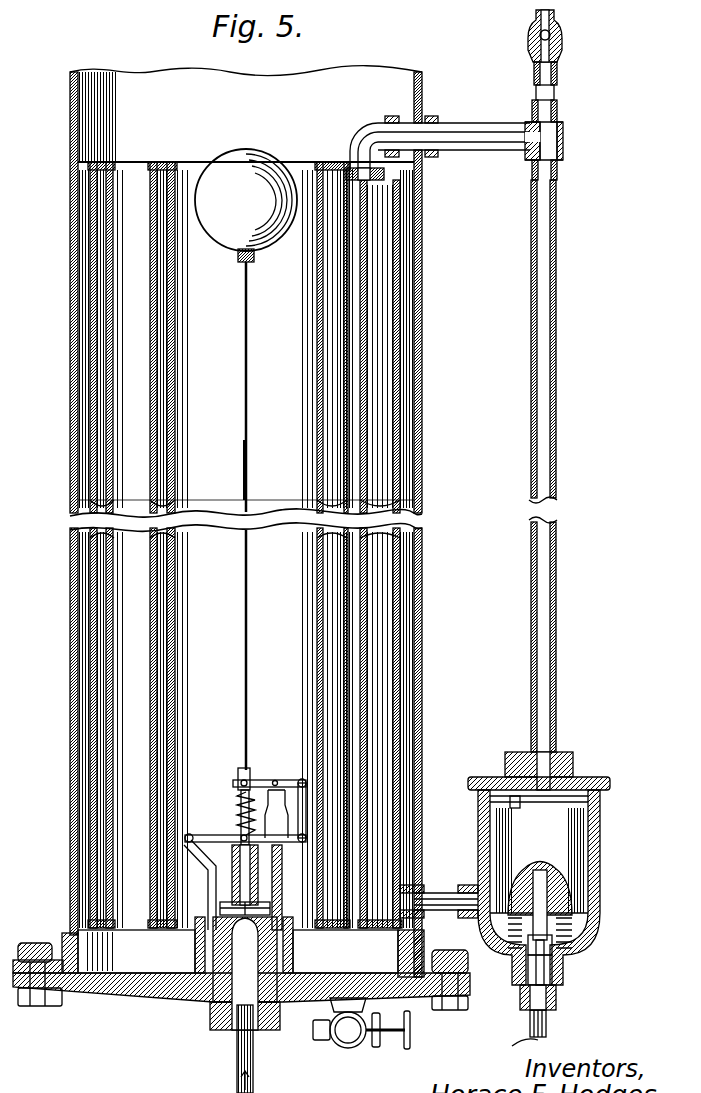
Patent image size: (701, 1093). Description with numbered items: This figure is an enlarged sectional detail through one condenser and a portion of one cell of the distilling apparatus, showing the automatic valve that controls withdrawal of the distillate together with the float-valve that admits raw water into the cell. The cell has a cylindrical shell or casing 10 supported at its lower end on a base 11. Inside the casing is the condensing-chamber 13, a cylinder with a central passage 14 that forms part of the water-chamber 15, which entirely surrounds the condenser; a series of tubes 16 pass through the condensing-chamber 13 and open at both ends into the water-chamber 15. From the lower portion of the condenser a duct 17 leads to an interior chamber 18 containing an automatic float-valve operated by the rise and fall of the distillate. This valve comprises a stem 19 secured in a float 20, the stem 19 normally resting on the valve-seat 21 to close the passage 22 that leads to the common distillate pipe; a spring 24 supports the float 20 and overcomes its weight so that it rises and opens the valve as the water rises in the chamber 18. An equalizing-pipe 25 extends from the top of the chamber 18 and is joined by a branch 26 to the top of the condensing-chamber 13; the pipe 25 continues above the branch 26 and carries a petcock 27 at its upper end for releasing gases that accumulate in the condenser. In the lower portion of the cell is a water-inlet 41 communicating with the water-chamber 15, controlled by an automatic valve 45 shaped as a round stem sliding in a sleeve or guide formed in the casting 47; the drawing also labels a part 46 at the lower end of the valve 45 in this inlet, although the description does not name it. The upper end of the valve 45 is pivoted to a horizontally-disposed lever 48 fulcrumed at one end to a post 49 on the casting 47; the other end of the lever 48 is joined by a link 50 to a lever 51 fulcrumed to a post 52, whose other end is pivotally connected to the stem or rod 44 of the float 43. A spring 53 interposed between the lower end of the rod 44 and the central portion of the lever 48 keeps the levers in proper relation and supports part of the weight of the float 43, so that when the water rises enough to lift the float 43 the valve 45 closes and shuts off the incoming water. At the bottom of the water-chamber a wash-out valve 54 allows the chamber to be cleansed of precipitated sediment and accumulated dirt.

The cylindrical shell or casing 10 is at (221, 521).
The base 11 is at (132, 999).
The condensing-chamber 13 is at (172, 163).
The central passage 14 is at (266, 516).
The water-chamber 15 is at (85, 940).
The tubes 16 is at (120, 372).
The duct 17 is at (432, 893).
The interior chamber 18 is at (592, 905).
The stem 19 is at (566, 938).
The float 20 is at (598, 842).
The valve-seat 21 is at (568, 955).
The passage 22 is at (548, 975).
The spring 24 is at (574, 916).
The equalizing-pipe 25 is at (557, 420).
The branch 26 is at (489, 117).
The petcock 27 is at (530, 24).
The water-inlet 41 is at (212, 1012).
The float 43 is at (232, 236).
The stem or rod 44 is at (248, 462).
The automatic valve 45 is at (258, 905).
The valve disc 46 is at (250, 918).
The casting 47 is at (257, 909).
The lever 48 is at (231, 842).
The post 49 is at (212, 880).
The link 50 is at (306, 800).
The lever 51 is at (303, 779).
The post 52 is at (275, 780).
The spring 53 is at (240, 795).
The wash-out valve 54 is at (361, 1041).